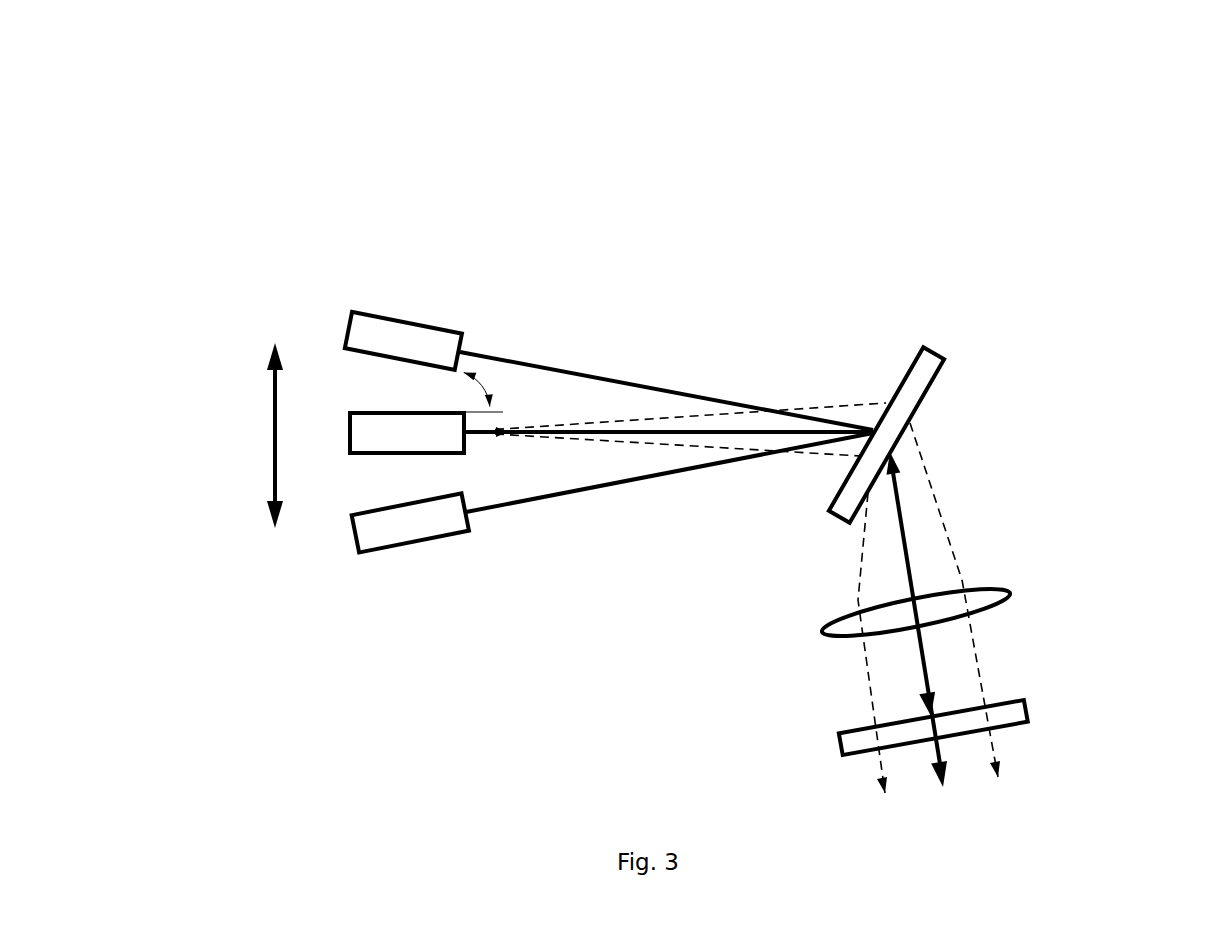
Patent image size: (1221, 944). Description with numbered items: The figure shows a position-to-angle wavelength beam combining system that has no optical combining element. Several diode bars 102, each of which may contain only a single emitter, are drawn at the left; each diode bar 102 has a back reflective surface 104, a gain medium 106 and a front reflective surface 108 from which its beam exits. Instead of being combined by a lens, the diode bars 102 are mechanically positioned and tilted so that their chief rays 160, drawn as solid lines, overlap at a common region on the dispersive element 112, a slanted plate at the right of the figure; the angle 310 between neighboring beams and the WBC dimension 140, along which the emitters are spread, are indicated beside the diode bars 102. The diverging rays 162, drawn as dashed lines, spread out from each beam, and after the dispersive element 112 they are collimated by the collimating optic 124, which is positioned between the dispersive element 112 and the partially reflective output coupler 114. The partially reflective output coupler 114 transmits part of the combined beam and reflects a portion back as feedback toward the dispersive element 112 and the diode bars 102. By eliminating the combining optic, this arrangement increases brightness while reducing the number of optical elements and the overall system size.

The diode bar 102 is at (340, 175).
The back reflective surface 104 is at (352, 308).
The gain medium 106 is at (395, 317).
The front reflective surface 108 is at (447, 403).
The dispersive element 112 is at (925, 345).
The partially reflective output coupler 114 is at (1042, 707).
The collimating optic 124 is at (1023, 585).
The WBC dimension 140 is at (246, 435).
The chief rays 160 is at (660, 433).
The diverging rays 162 is at (697, 448).
The angle 310 is at (483, 378).